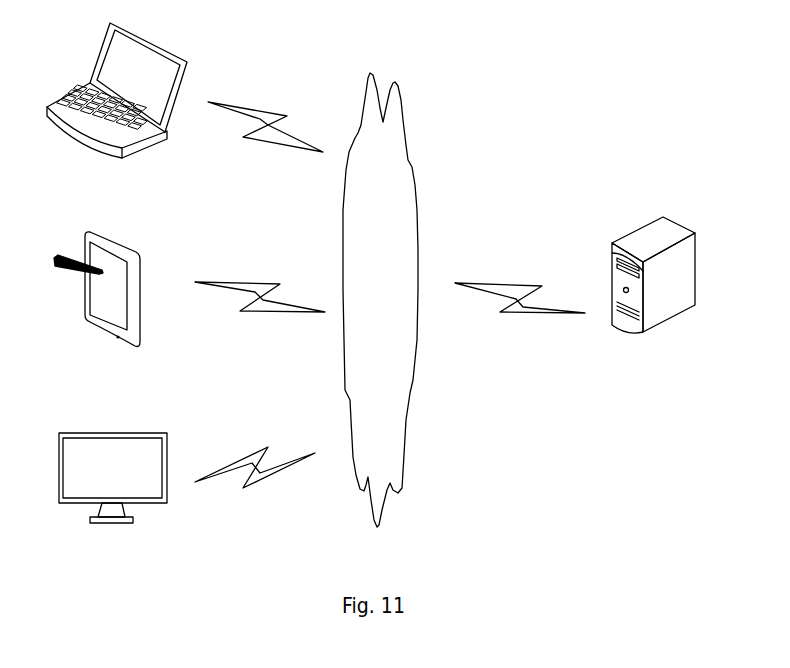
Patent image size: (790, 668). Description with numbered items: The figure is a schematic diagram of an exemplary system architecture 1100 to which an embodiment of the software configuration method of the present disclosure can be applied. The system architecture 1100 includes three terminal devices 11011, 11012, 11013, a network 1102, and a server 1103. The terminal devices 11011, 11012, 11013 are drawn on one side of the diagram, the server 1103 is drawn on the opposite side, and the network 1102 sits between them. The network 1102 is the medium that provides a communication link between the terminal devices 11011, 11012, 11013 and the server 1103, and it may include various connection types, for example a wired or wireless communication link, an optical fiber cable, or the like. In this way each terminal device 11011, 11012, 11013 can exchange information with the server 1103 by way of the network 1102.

The system architecture 1100 is at (637, 106).
The terminal device 11011 is at (117, 116).
The terminal device 11012 is at (101, 310).
The terminal device 11013 is at (113, 502).
The network 1102 is at (380, 300).
The server 1103 is at (653, 297).